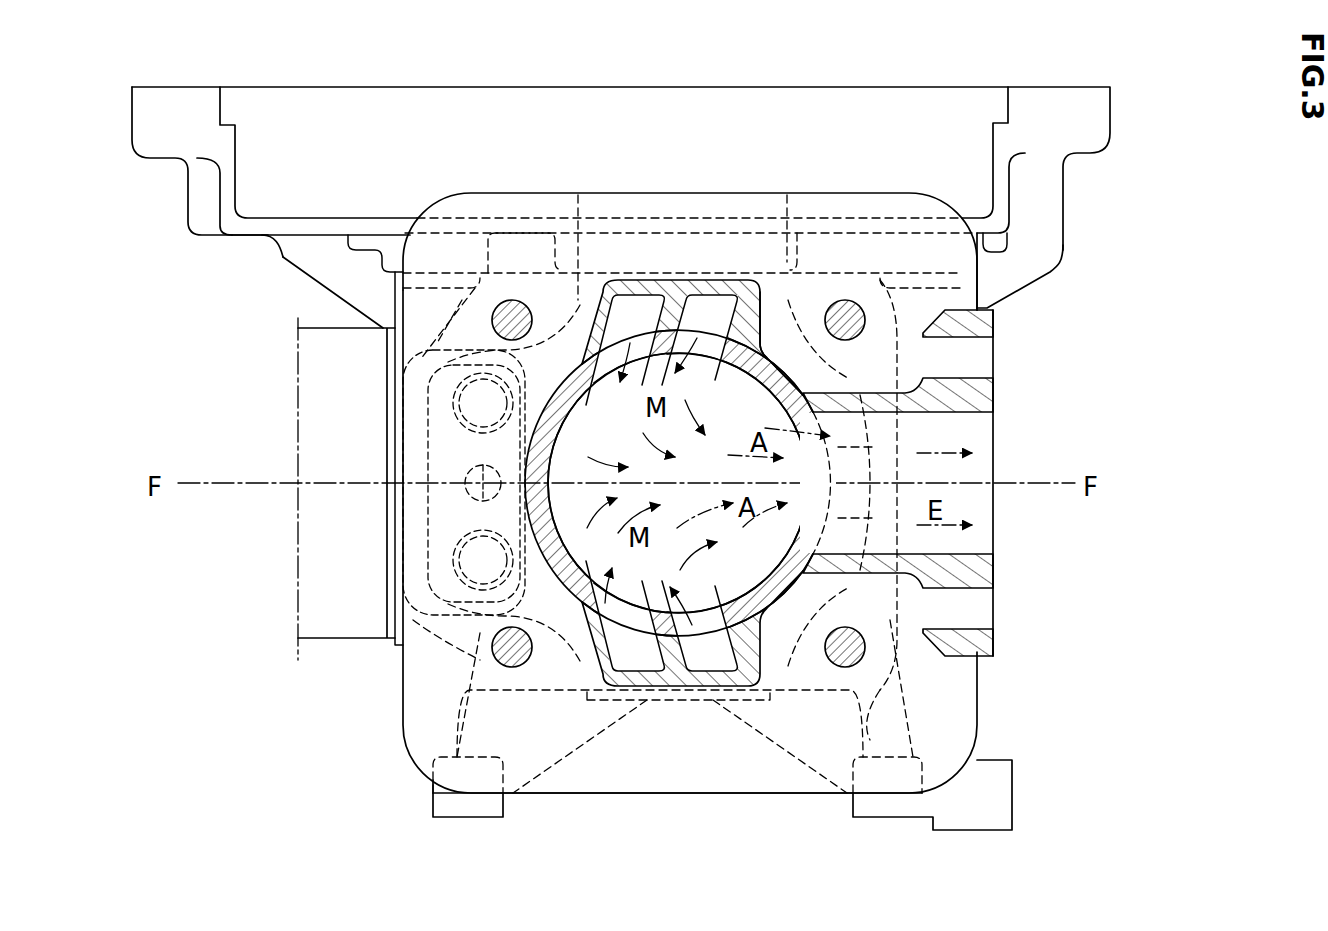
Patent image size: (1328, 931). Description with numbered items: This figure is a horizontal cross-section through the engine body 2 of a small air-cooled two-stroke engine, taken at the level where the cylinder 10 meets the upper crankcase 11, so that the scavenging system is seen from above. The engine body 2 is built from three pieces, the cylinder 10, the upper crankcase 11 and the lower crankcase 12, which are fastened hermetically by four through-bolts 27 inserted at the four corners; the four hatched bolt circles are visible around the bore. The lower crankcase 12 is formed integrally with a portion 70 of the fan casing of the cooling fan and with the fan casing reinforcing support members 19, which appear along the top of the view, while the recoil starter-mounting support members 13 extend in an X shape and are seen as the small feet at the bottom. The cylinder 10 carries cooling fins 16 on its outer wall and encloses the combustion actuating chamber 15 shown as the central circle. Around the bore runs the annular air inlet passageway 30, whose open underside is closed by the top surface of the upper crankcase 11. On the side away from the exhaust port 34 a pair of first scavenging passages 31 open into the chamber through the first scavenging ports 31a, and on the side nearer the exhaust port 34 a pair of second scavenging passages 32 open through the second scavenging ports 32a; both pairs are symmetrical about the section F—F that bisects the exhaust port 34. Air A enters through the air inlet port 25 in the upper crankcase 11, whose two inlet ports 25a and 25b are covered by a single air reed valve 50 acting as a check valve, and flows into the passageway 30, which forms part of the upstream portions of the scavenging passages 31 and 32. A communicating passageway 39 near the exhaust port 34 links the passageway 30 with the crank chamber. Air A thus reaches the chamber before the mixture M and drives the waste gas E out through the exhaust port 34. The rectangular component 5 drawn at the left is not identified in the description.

The engine body 2 is at (310, 765).
The crankcase 5 is at (345, 640).
The cylinder 10 is at (777, 355).
The upper crankcase 11 is at (895, 638).
The lower crankcase 12 is at (312, 292).
The recoil starter-mounting support members 13 is at (442, 797).
The combustion actuating chamber 15 is at (567, 533).
The cooling fins 16 is at (515, 205).
The fan casing reinforcing support members 19 is at (283, 252).
The air inlet port 25 is at (443, 517).
The inlet port 25a is at (450, 390).
The inlet port 25b is at (470, 540).
The through-bolts 27 is at (505, 308).
The annular air inlet passageway 30 is at (583, 300).
The first scavenging passages 31 is at (633, 303).
The first scavenging ports 31a is at (605, 380).
The second scavenging passages 32 is at (708, 303).
The second scavenging ports 32a is at (695, 342).
The exhaust port 34 is at (811, 540).
The communicating passageway 39 is at (873, 447).
The air reed valve 50 is at (460, 452).
The portion of the fan casing 70 is at (183, 188).